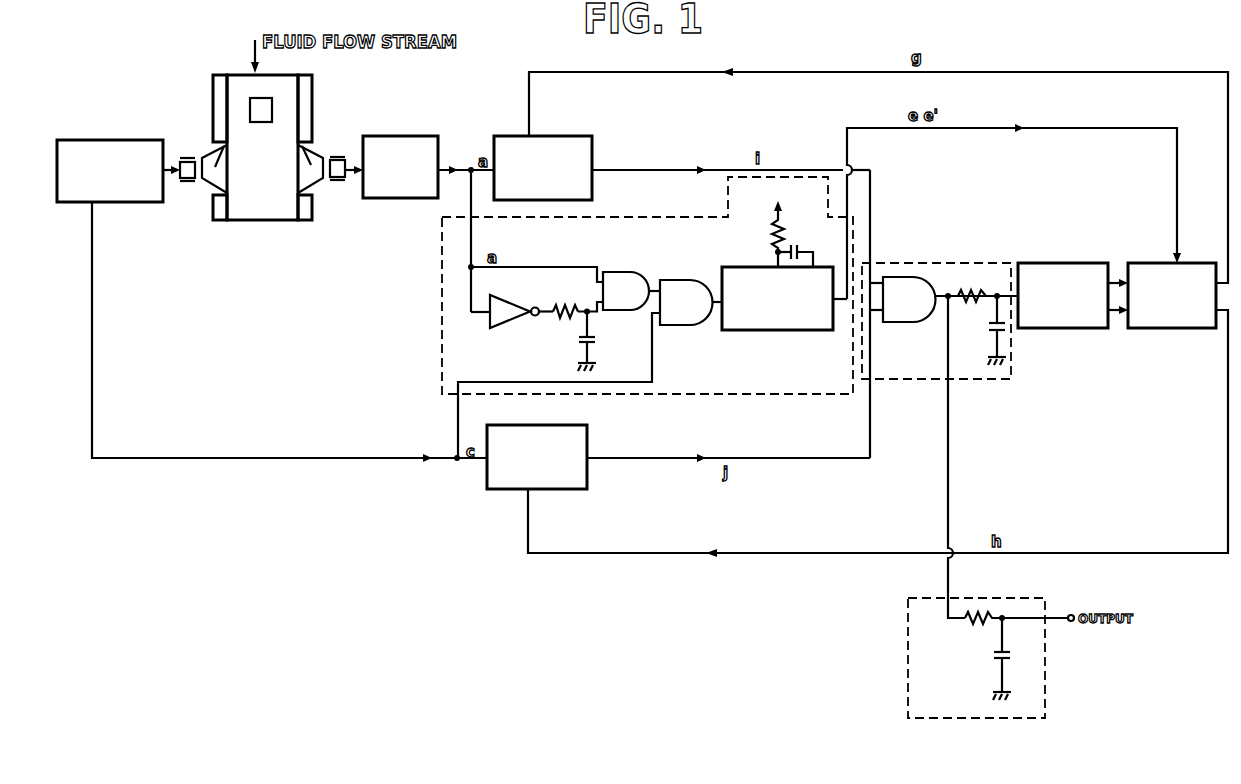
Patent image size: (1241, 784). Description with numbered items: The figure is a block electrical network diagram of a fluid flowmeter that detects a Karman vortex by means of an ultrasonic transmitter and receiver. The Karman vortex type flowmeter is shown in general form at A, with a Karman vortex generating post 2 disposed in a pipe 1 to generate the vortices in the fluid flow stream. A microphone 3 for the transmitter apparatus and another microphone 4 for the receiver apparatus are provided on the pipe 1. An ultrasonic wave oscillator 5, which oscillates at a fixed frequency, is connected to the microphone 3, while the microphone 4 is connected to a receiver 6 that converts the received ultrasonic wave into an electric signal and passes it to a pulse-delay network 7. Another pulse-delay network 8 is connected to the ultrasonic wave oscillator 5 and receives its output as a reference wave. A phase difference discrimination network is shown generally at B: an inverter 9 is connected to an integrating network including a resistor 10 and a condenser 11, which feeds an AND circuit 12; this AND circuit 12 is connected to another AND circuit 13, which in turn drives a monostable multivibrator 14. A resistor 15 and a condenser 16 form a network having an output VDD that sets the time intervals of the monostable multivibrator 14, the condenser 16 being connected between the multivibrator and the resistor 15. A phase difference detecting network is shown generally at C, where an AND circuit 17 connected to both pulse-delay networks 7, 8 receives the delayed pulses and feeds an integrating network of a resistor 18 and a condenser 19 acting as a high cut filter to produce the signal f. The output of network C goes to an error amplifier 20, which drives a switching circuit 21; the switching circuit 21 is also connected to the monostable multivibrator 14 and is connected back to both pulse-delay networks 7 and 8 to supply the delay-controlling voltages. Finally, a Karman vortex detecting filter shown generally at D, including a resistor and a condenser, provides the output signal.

The pipe 1 is at (283, 83).
The Karman vortex generating post 2 is at (268, 110).
The microphone for transmitter apparatus 3 is at (213, 160).
The microphone for receiver apparatus 4 is at (312, 166).
The ultrasonic wave oscillator 5 is at (121, 140).
The receiver 6 is at (394, 136).
The pulse-delay network 7 is at (516, 136).
The pulse-delay network 8 is at (522, 425).
The inverter 9 is at (508, 318).
The resistor 10 is at (565, 309).
The condenser 11 is at (598, 339).
The AND circuit 12 is at (625, 271).
The AND circuit 13 is at (692, 279).
The monostable multivibrator 14 is at (783, 331).
The resistor 15 is at (772, 235).
The condenser 16 is at (802, 248).
The AND circuit 17 is at (909, 322).
The resistor 18 is at (971, 283).
The condenser 19 is at (989, 330).
The error amplifier 20 is at (1072, 263).
The switching circuit 21 is at (1148, 263).
The Karman vortex type flowmeter A is at (246, 228).
The phase difference discrimination network B is at (650, 216).
The phase difference detecting network C is at (930, 260).
The Karman vortex detecting filter D is at (902, 663).